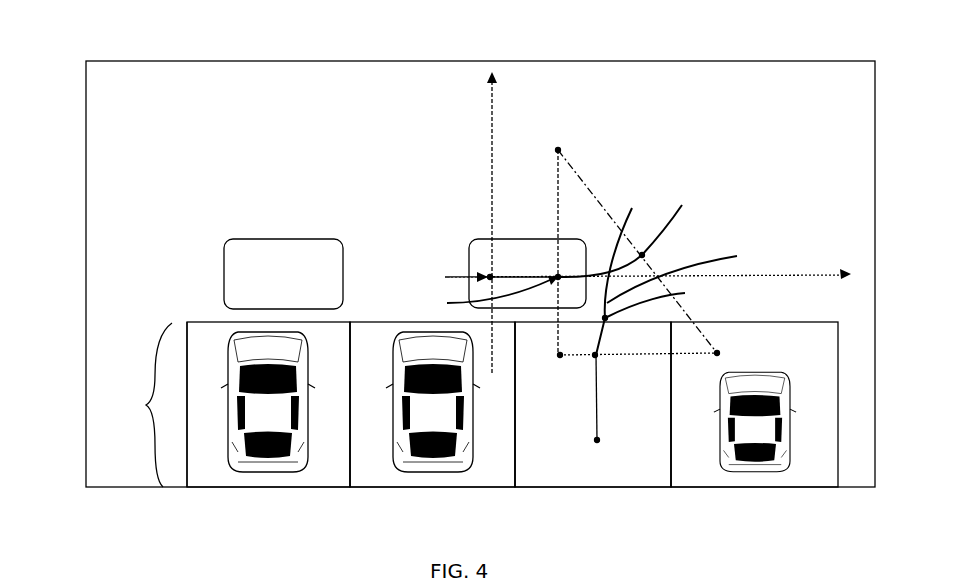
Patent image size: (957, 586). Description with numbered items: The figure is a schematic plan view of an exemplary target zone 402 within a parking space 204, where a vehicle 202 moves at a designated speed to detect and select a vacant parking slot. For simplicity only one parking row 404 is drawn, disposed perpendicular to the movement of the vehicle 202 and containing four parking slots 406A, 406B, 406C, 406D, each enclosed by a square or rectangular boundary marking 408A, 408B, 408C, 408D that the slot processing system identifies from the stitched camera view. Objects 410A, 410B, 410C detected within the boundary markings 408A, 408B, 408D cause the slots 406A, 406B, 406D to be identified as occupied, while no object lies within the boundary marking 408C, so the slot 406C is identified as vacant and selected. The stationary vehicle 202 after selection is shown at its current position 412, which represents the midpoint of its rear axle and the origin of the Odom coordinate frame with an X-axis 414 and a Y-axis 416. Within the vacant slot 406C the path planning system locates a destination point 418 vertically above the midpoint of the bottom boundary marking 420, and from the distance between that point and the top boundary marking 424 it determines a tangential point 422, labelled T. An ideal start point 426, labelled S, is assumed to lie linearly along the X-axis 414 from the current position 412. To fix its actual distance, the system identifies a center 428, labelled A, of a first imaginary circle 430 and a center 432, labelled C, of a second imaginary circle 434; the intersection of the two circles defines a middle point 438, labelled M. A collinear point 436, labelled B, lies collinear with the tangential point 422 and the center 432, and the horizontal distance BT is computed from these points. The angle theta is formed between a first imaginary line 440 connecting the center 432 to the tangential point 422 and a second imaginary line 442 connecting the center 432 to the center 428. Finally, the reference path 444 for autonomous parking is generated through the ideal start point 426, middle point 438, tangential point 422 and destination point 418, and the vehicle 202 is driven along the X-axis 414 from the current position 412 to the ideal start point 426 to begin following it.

The parking space 204 is at (289, 56).
The target zone 402 is at (108, 279).
The vehicle 202 is at (224, 249).
The parking row 404 is at (139, 405).
The parking slot 406A is at (257, 477).
The parking slot 406B is at (423, 477).
The parking slot 406C is at (645, 471).
The parking slot 406D is at (752, 475).
The boundary marking 408A is at (187, 438).
The boundary marking 408B is at (348, 433).
The boundary marking 408C is at (515, 463).
The boundary marking 408D is at (670, 433).
The object 410A is at (305, 441).
The object 410B is at (463, 447).
The object 410C is at (785, 445).
The current position 412 is at (460, 271).
The X-axis 414 is at (853, 274).
The Y-axis 416 is at (493, 72).
The destination point 418 is at (600, 440).
The bottom boundary marking 420 is at (596, 496).
The tangential point 422 is at (598, 358).
The top boundary marking 424 is at (660, 301).
The ideal start point 426 is at (493, 284).
The center 428 is at (558, 138).
The first imaginary circle 430 is at (620, 271).
The center 432 is at (720, 350).
The second imaginary circle 434 is at (686, 275).
The collinear point 436 is at (559, 367).
The middle point 438 is at (633, 232).
The first imaginary line 440 is at (685, 357).
The second imaginary line 442 is at (700, 322).
The reference path 444 is at (523, 263).